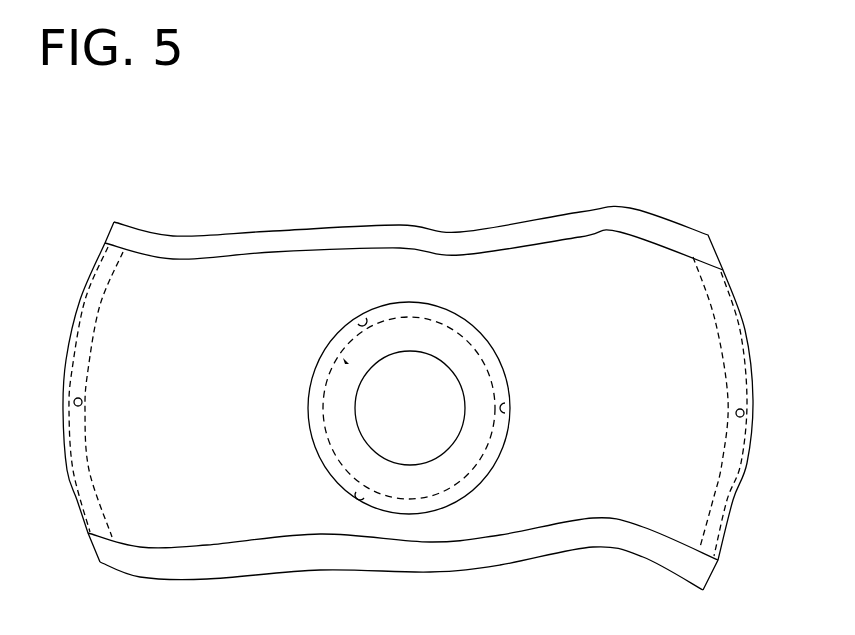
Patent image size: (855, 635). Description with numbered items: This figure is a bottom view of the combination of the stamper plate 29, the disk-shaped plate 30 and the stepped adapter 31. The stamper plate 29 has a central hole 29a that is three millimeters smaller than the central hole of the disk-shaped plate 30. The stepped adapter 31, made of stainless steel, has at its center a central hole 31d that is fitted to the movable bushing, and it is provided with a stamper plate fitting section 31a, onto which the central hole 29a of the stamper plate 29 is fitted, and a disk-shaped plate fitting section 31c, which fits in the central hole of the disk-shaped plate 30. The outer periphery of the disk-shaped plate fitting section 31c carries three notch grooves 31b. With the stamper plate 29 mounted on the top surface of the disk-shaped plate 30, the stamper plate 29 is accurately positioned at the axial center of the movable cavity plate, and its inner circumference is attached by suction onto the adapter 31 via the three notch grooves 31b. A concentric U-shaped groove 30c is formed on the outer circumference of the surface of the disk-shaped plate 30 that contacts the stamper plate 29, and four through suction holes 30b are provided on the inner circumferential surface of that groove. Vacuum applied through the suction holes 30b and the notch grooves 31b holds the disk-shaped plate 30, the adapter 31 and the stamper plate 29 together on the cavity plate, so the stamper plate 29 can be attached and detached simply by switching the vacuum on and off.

The stamper plate 29 is at (228, 247).
The central hole of the stamper plate 29a is at (346, 362).
The disk-shaped plate 30 is at (438, 394).
The through suction holes 30b is at (82, 402).
The concentric U-shaped groove 30c is at (745, 340).
The stepped adapter 31 is at (440, 394).
The stamper plate fitting section 31a is at (466, 327).
The notch grooves 31b is at (503, 417).
The disk-shaped plate fitting section 31c is at (502, 363).
The central hole of the adapter 31d is at (447, 452).